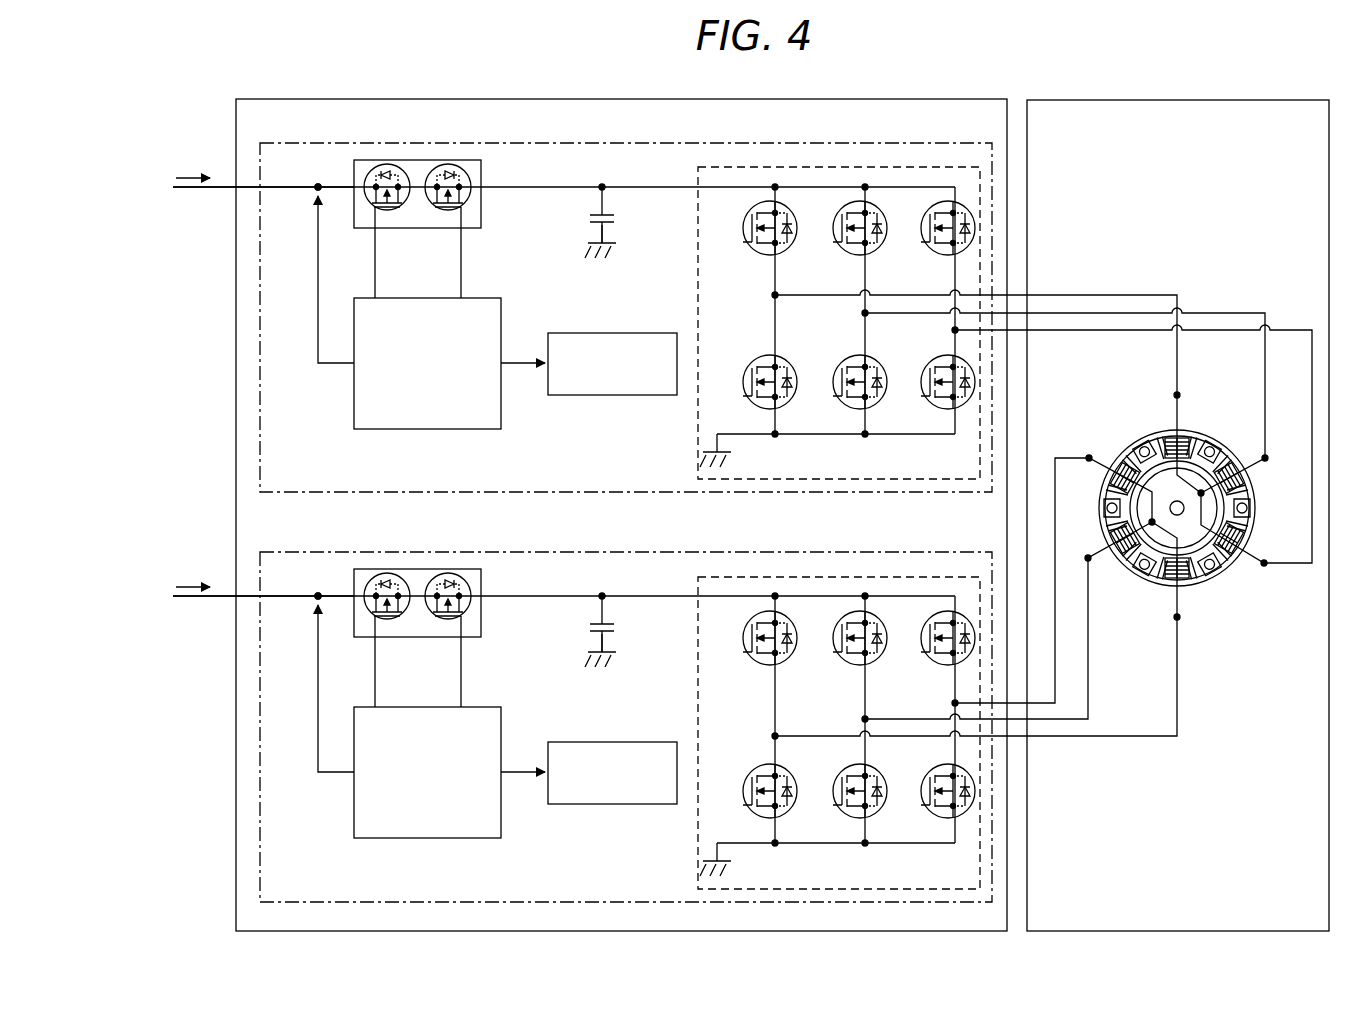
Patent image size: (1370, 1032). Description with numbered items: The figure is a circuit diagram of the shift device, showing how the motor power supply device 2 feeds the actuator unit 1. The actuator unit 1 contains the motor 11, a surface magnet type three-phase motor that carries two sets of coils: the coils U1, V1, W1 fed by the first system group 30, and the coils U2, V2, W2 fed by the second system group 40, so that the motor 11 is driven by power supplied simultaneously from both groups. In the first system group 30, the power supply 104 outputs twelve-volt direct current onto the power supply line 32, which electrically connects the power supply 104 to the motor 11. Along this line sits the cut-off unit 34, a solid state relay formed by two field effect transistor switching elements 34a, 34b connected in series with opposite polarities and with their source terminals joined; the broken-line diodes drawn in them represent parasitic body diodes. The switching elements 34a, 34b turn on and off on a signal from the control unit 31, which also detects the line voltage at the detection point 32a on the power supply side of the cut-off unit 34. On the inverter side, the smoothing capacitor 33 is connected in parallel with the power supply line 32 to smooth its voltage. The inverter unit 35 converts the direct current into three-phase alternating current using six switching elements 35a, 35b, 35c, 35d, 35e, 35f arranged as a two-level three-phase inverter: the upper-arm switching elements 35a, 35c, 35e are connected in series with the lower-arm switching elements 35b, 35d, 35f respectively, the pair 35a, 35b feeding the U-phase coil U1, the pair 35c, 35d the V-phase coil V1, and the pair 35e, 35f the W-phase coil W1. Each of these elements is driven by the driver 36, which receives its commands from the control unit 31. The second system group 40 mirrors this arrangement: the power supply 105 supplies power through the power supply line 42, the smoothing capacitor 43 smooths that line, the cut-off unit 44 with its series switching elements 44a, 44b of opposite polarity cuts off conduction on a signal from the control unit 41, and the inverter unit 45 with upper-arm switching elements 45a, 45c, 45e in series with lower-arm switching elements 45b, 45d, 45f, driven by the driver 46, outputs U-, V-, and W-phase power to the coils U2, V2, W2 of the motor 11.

The actuator unit 1 is at (1312, 100).
The motor power supply device 2 is at (988, 99).
The motor 11 is at (1237, 268).
The first system group 30 is at (945, 143).
The control unit 31 is at (487, 298).
The power supply line 32 is at (292, 163).
The detection point 32a is at (329, 263).
The smoothing capacitor 33 is at (616, 212).
The cut-off unit 34 is at (488, 160).
The switching element 34a is at (400, 160).
The switching element 34b is at (462, 160).
The inverter unit 35 is at (730, 166).
The switching element 35a is at (756, 256).
The switching element 35b is at (742, 368).
The switching element 35c is at (846, 256).
The switching element 35d is at (832, 368).
The switching element 35e is at (934, 256).
The switching element 35f is at (920, 368).
The driver 36 is at (650, 333).
The second system group 40 is at (945, 552).
The control unit 41 is at (487, 707).
The power supply line 42 is at (298, 586).
The smoothing capacitor 43 is at (616, 621).
The cut-off unit 44 is at (488, 569).
The switching element 44a is at (400, 569).
The switching element 44b is at (462, 569).
The inverter unit 45 is at (730, 575).
The switching element 45a is at (756, 666).
The switching element 45b is at (742, 777).
The switching element 45c is at (846, 666).
The switching element 45d is at (832, 777).
The switching element 45e is at (934, 666).
The switching element 45f is at (920, 777).
The driver 46 is at (650, 742).
The power supply 104 is at (196, 164).
The power supply 105 is at (196, 573).
The U-phase coil U1 is at (1191, 428).
The V-phase coil V1 is at (1254, 488).
The W-phase coil W1 is at (1254, 546).
The U-phase coil U2 is at (1189, 594).
The V-phase coil V2 is at (1104, 522).
The W-phase coil W2 is at (1120, 454).